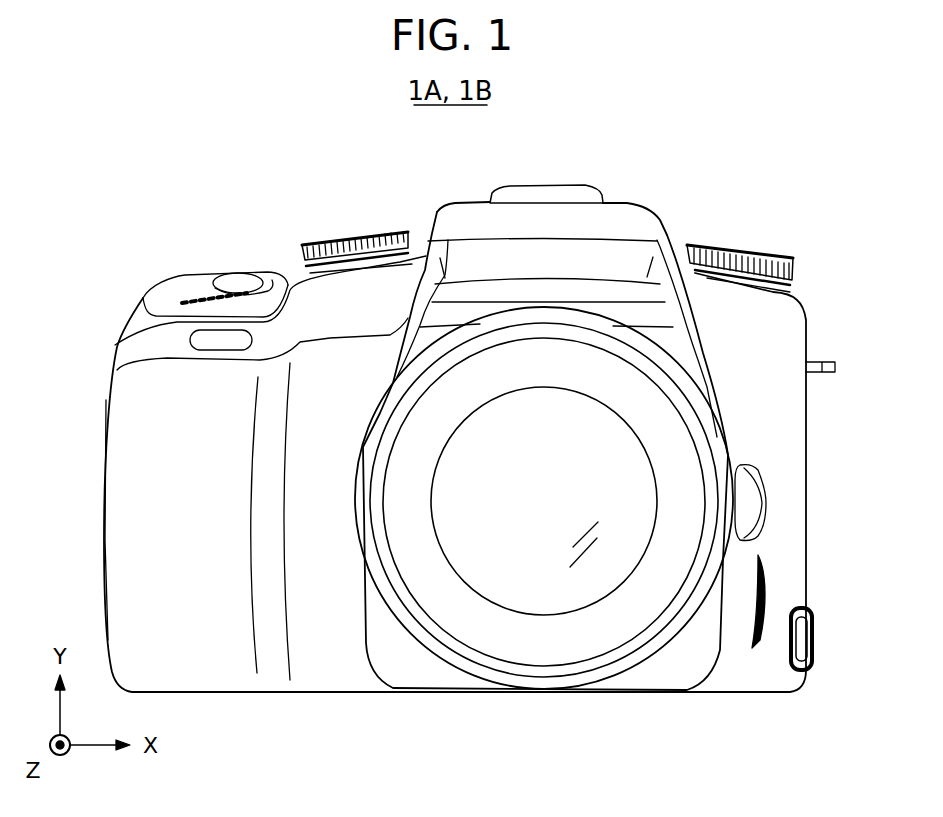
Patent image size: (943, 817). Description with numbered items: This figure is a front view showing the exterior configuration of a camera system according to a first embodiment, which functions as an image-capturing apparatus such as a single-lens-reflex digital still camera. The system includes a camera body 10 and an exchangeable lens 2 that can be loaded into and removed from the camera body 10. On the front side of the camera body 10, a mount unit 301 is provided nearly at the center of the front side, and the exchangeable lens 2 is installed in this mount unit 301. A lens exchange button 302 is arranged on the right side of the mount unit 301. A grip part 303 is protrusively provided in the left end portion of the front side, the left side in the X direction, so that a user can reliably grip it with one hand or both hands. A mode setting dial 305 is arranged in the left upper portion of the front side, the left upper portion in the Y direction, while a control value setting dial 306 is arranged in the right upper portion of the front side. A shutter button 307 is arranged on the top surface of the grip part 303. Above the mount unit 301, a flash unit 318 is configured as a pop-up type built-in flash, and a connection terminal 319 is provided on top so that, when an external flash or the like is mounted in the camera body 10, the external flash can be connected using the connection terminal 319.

The camera body 10 is at (148, 272).
The exchangeable lens 2 is at (642, 513).
The mount unit 301 is at (647, 662).
The lens exchange button 302 is at (750, 502).
The grip part 303 is at (133, 545).
The mode setting dial 305 is at (355, 237).
The control value setting dial 306 is at (742, 250).
The shutter button 307 is at (237, 280).
The flash unit 318 is at (435, 210).
The connection terminal 319 is at (555, 197).